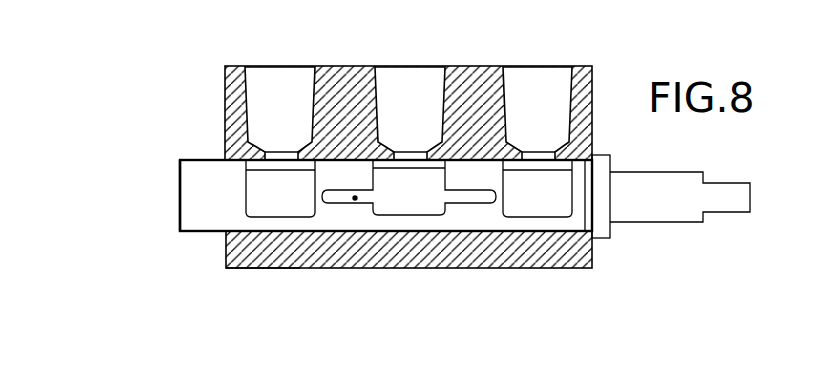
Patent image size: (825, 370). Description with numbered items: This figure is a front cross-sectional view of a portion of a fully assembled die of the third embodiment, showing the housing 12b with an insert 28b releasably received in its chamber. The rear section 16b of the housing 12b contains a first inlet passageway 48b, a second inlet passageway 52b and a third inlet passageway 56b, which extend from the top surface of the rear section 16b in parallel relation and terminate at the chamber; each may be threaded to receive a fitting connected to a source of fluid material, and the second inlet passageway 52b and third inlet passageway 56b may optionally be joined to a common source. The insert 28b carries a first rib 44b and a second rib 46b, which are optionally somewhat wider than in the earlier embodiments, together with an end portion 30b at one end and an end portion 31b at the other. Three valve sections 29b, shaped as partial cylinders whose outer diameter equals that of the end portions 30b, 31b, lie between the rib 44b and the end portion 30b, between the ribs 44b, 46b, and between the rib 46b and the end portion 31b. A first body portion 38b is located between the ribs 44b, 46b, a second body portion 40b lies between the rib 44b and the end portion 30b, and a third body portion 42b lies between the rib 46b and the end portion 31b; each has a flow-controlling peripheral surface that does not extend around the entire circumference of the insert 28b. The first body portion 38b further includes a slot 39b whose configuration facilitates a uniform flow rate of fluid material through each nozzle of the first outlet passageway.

The housing 12b is at (225, 251).
The rear section 16b is at (243, 262).
The insert 28b is at (196, 158).
The valve sections 29b is at (400, 222).
The end portion 30b is at (190, 182).
The end portion 31b is at (578, 223).
The first body portion 38b is at (427, 212).
The slot 39b is at (355, 198).
The second body portion 40b is at (258, 200).
The third body portion 42b is at (523, 210).
The first rib 44b is at (333, 216).
The second rib 46b is at (470, 175).
The first inlet passageway 48b is at (440, 92).
The second inlet passageway 52b is at (308, 92).
The third inlet passageway 56b is at (563, 92).